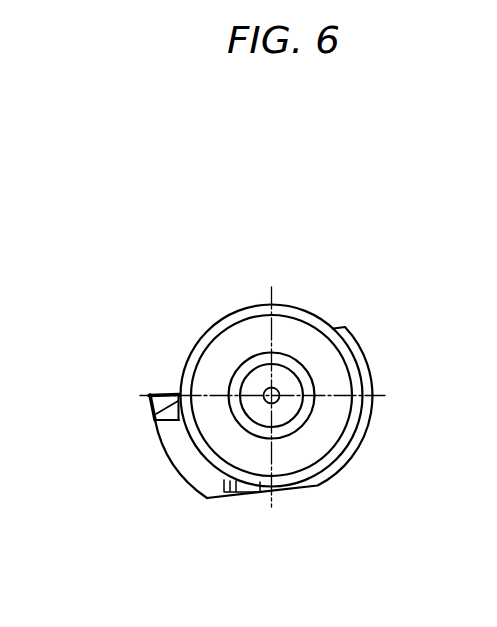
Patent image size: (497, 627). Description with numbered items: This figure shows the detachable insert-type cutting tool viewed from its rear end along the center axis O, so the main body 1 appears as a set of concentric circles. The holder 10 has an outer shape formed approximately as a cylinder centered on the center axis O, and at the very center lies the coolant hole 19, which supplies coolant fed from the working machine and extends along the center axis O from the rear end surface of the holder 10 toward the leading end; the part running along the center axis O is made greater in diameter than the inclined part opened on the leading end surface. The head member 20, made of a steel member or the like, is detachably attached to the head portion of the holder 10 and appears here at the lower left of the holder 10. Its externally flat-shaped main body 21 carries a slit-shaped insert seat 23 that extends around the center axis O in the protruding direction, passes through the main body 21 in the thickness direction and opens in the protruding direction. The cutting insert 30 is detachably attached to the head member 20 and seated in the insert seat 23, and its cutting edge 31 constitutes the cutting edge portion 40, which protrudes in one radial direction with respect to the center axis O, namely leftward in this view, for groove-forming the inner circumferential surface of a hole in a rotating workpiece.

The main body 1 is at (212, 272).
The holder 10 is at (285, 275).
The coolant hole 19 is at (258, 410).
The center axis O is at (277, 403).
The head member 20 is at (203, 500).
The main body of the head member 21 is at (190, 462).
The insert seat 23 is at (168, 425).
The cutting insert 30 is at (142, 414).
The cutting edge 31 is at (152, 395).
The cutting edge portion 40 is at (132, 382).